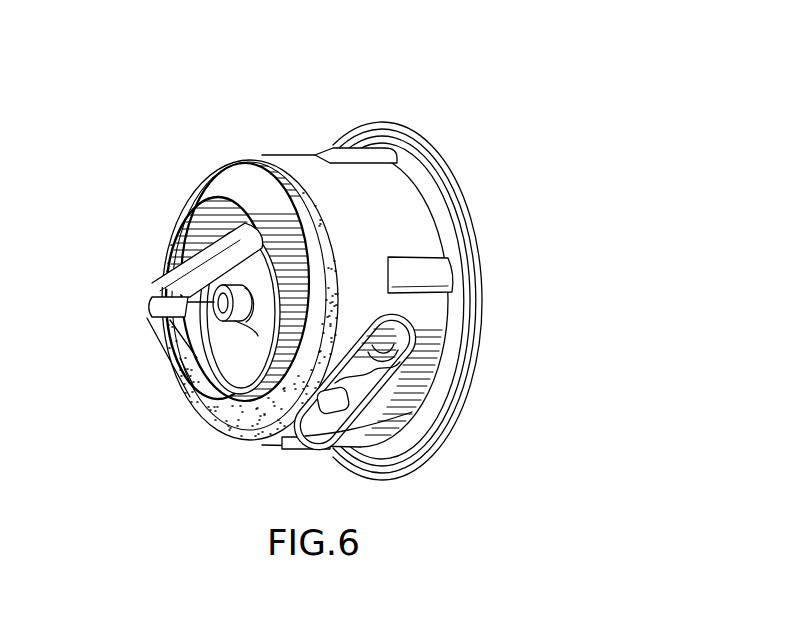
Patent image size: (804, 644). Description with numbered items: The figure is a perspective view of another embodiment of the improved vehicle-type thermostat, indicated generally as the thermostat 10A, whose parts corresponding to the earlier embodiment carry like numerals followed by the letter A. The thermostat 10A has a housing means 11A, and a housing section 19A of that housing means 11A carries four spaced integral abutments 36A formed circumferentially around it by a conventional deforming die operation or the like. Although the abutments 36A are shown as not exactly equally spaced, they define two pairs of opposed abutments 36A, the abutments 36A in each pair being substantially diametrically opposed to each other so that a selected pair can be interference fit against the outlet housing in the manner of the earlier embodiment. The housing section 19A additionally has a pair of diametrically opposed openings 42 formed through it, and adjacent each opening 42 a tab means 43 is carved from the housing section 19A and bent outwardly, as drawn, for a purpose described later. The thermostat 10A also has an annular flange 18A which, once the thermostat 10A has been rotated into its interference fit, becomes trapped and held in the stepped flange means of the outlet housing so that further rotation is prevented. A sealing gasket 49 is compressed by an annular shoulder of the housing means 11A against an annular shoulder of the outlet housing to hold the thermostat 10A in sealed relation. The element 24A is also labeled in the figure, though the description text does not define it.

The thermostat 10A is at (478, 132).
The housing means 11A is at (295, 154).
The annular flange 18A is at (392, 122).
The housing section 19A is at (400, 207).
The abutments 36A is at (355, 152).
The handle lever and hub 24A is at (225, 342).
The sealing gasket 49 is at (230, 413).
The openings 42 is at (360, 438).
The tab means 43 is at (403, 407).